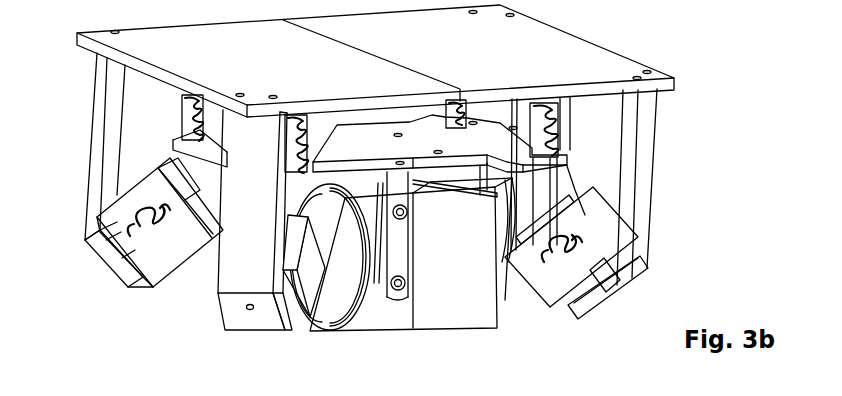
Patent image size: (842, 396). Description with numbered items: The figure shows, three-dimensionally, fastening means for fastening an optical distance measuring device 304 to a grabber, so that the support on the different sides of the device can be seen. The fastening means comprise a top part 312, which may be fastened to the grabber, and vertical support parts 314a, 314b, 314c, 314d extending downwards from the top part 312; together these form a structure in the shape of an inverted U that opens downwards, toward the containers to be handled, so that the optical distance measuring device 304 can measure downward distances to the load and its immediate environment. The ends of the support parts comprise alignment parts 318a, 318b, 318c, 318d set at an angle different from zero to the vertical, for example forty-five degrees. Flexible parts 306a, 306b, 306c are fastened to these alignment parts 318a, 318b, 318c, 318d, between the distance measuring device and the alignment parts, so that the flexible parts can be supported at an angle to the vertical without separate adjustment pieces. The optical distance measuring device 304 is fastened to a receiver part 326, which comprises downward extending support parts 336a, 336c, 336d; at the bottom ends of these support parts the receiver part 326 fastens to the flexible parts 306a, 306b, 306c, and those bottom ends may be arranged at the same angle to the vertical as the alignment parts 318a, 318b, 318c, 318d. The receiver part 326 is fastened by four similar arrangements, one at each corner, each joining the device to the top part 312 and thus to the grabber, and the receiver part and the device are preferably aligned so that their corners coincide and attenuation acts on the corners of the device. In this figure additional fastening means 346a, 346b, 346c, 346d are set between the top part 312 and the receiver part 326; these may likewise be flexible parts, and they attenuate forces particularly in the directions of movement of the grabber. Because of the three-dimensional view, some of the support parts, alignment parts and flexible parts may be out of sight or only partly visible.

The optical distance measuring device 304 is at (411, 251).
The flexible part 306a is at (177, 274).
The flexible part 306b is at (310, 325).
The flexible part 306c is at (522, 283).
The top part 312 is at (375, 61).
The vertical support part 314a is at (88, 98).
The vertical support part 314b is at (252, 201).
The vertical support part 314c is at (652, 216).
The vertical support part 314d is at (522, 113).
The alignment part 318a is at (117, 281).
The alignment part 318b is at (240, 331).
The alignment part 318c is at (613, 303).
The alignment part 318d is at (502, 253).
The receiver part 326 is at (370, 143).
The support part of the receiver part 336a is at (177, 157).
The support part of the receiver part 336c is at (590, 158).
The support part of the receiver part 336d is at (500, 198).
The fastening means 346a is at (182, 128).
The fastening means 346b is at (307, 156).
The fastening means 346c is at (557, 118).
The fastening means 346d is at (447, 110).